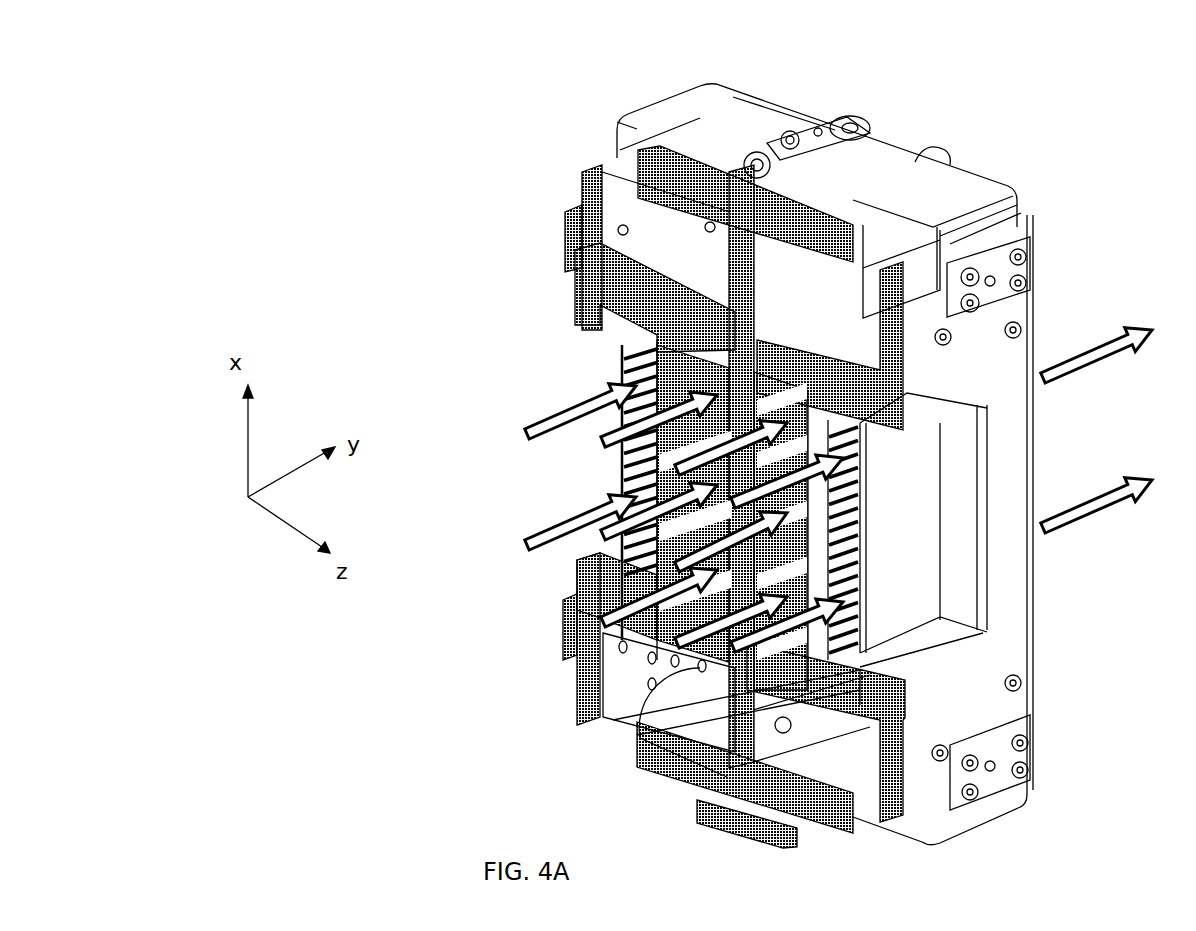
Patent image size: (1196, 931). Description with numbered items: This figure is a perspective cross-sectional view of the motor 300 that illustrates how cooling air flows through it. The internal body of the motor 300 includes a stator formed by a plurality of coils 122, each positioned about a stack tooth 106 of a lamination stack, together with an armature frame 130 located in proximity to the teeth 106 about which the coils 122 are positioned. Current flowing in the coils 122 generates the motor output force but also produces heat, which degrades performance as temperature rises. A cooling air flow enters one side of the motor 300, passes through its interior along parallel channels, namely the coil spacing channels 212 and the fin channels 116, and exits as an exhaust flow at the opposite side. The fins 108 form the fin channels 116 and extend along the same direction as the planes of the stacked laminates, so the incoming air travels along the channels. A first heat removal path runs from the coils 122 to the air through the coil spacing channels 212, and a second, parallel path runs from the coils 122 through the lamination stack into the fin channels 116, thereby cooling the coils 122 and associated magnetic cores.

The motor 300 is at (1100, 110).
The coils 122 is at (586, 318).
The stack tooth 106 is at (622, 357).
The coil spacing channels 212 is at (627, 410).
The fin channels 116 is at (600, 565).
The fins 108 is at (595, 623).
The armature frame 130 is at (863, 520).